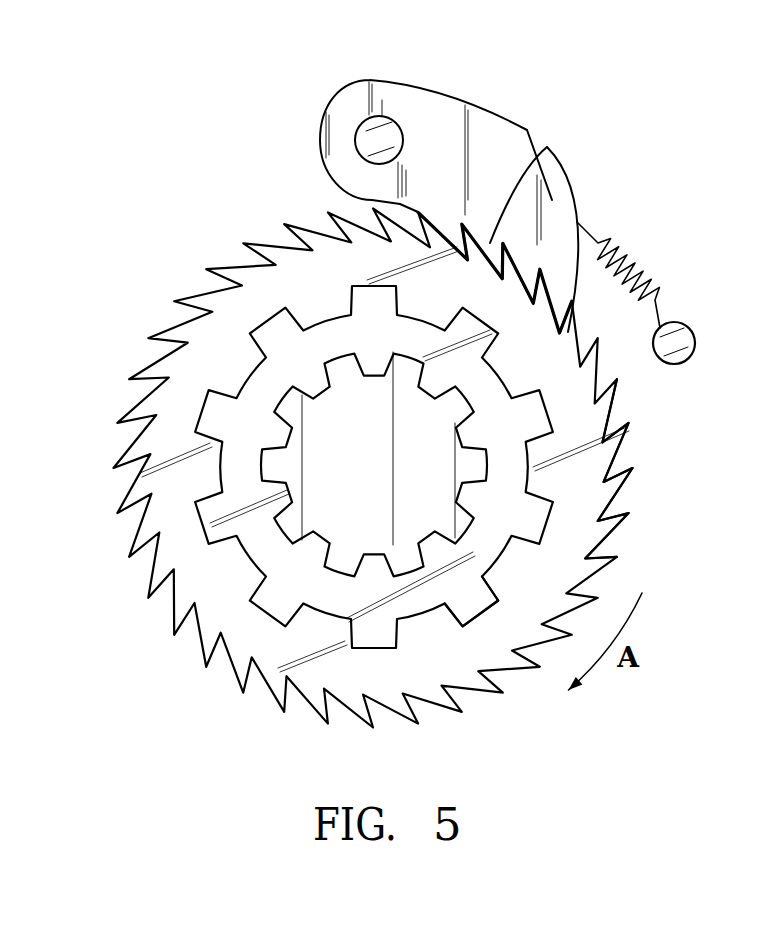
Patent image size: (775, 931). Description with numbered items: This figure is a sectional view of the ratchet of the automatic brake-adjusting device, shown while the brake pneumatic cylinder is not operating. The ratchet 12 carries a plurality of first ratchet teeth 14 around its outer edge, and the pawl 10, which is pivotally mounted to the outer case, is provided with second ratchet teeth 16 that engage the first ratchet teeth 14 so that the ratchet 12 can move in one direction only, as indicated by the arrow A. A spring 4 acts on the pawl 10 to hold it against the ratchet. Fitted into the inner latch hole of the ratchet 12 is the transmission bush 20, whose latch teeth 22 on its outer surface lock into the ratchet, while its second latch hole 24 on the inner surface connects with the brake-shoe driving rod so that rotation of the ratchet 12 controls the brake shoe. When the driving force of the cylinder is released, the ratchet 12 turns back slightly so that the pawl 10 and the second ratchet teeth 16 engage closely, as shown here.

The spring 4 is at (645, 266).
The pawl 10 is at (467, 108).
The ratchet 12 is at (225, 295).
The first ratchet teeth 14 is at (630, 472).
The second ratchet teeth 16 is at (523, 162).
The transmission bush 20 is at (333, 340).
The latch teeth 22 is at (470, 607).
The second latch hole 24 is at (440, 545).